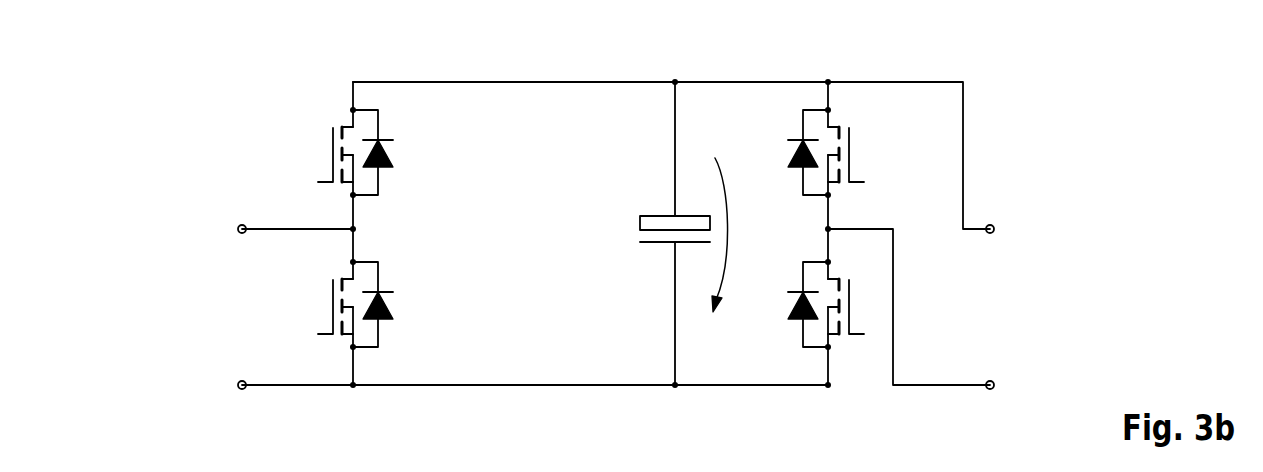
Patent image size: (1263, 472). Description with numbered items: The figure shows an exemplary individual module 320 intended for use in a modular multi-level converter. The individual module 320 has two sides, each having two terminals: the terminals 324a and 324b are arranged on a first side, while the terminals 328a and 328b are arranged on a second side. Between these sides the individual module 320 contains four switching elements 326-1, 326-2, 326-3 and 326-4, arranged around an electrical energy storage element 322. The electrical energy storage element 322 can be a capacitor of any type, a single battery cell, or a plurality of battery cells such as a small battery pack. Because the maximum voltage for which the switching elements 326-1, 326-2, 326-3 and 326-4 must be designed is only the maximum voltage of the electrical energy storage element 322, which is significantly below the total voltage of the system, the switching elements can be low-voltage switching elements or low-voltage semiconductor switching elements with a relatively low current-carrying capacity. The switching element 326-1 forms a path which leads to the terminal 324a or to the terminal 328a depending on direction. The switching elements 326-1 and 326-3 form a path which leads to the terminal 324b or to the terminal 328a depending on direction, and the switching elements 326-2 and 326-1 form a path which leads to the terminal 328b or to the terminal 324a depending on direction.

The individual module 320 is at (1010, 97).
The electrical energy storage element 322 is at (640, 253).
The switching element 326-1 is at (333, 157).
The switching element 326-2 is at (333, 310).
The switching element 326-3 is at (849, 157).
The switching element 326-4 is at (849, 310).
The terminal 328a is at (238, 229).
The terminal 328b is at (238, 385).
The terminal 324a is at (994, 227).
The terminal 324b is at (994, 383).